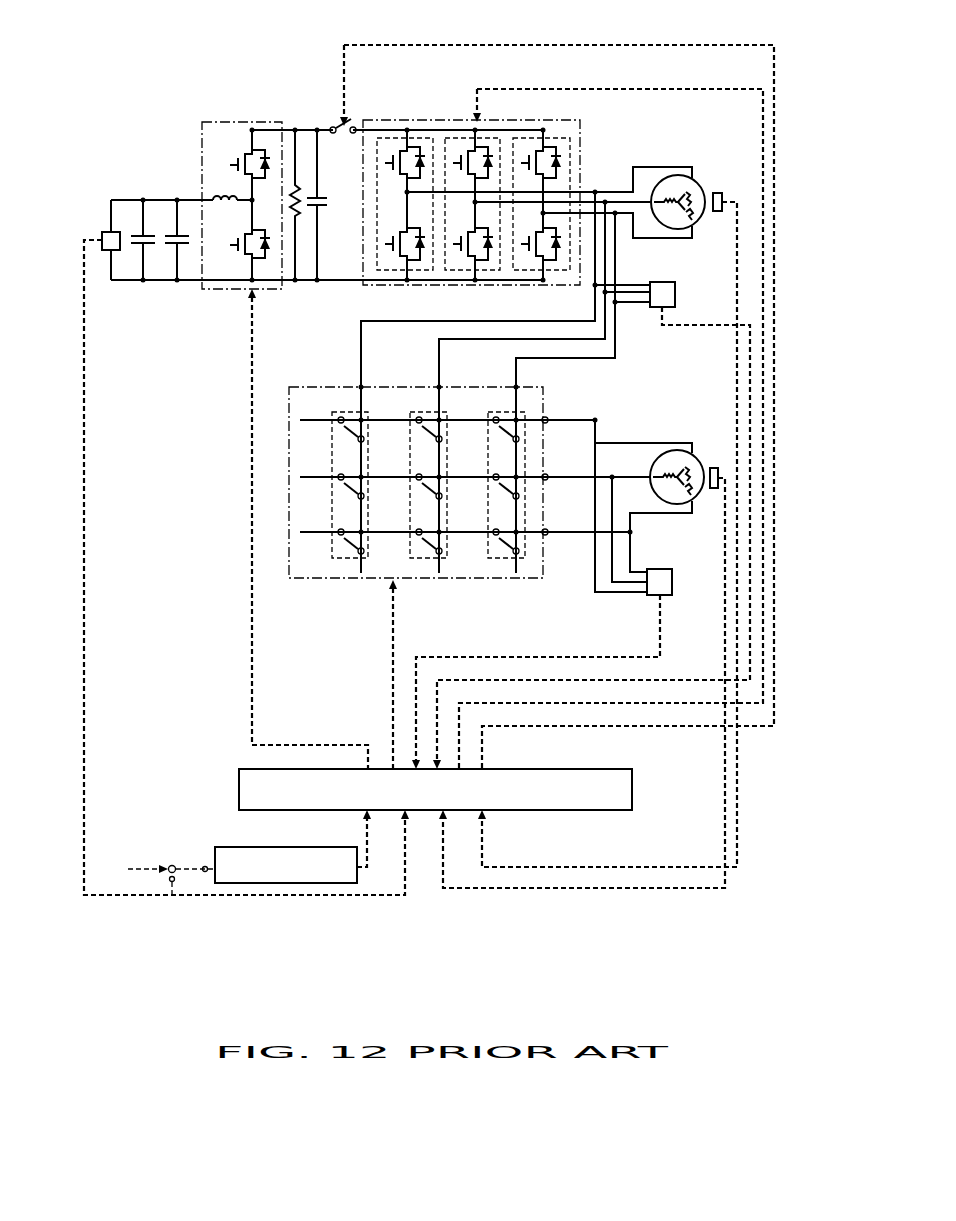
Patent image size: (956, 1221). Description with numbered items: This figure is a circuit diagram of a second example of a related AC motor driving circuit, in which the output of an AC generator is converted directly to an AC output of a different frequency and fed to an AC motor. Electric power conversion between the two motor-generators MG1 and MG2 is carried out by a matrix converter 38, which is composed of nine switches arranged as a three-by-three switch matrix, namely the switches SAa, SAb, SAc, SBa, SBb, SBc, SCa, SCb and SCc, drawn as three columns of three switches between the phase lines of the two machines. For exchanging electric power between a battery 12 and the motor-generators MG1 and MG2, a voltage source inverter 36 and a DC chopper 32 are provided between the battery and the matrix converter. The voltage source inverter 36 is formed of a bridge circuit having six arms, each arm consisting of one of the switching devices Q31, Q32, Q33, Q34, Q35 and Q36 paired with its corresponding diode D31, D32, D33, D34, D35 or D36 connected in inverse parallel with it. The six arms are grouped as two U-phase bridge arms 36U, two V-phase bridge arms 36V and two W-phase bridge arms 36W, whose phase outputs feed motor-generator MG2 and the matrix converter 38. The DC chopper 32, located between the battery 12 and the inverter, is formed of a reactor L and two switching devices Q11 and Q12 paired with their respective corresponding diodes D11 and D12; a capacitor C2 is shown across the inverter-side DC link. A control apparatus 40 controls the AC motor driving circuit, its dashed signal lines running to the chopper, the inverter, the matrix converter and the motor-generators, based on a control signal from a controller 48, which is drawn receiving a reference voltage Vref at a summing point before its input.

The battery 12 is at (141, 252).
The DC chopper 32 is at (202, 128).
The reactor L is at (217, 195).
The capacitor C2 is at (318, 210).
The switching device Q11 is at (240, 150).
The diode D11 is at (267, 148).
The switching device Q12 is at (240, 262).
The diode D12 is at (267, 262).
The voltage source inverter 36 is at (582, 125).
The U-phase bridge arms 36U is at (423, 138).
The V-phase bridge arms 36V is at (492, 138).
The W-phase bridge arms 36W is at (556, 138).
The switching device Q31 is at (398, 147).
The switching device Q32 is at (398, 262).
The switching device Q33 is at (466, 147).
The switching device Q34 is at (466, 262).
The switching device Q35 is at (534, 147).
The switching device Q36 is at (534, 262).
The diode D31 is at (424, 172).
The diode D32 is at (424, 254).
The diode D33 is at (493, 172).
The diode D34 is at (493, 254).
The diode D35 is at (558, 147).
The diode D36 is at (558, 262).
The motor-generator MG2 is at (665, 175).
The motor-generator MG1 is at (661, 449).
The matrix converter 38 is at (548, 389).
The switch SAa is at (350, 411).
The switch SAb is at (350, 468).
The switch SAc is at (350, 524).
The switch SBa is at (428, 411).
The switch SBb is at (428, 468).
The switch SBc is at (428, 524).
The switch SCa is at (505, 411).
The switch SCb is at (505, 468).
The switch SCc is at (505, 524).
The control apparatus 40 is at (635, 783).
The controller 48 is at (312, 884).
The reference voltage Vref is at (150, 873).